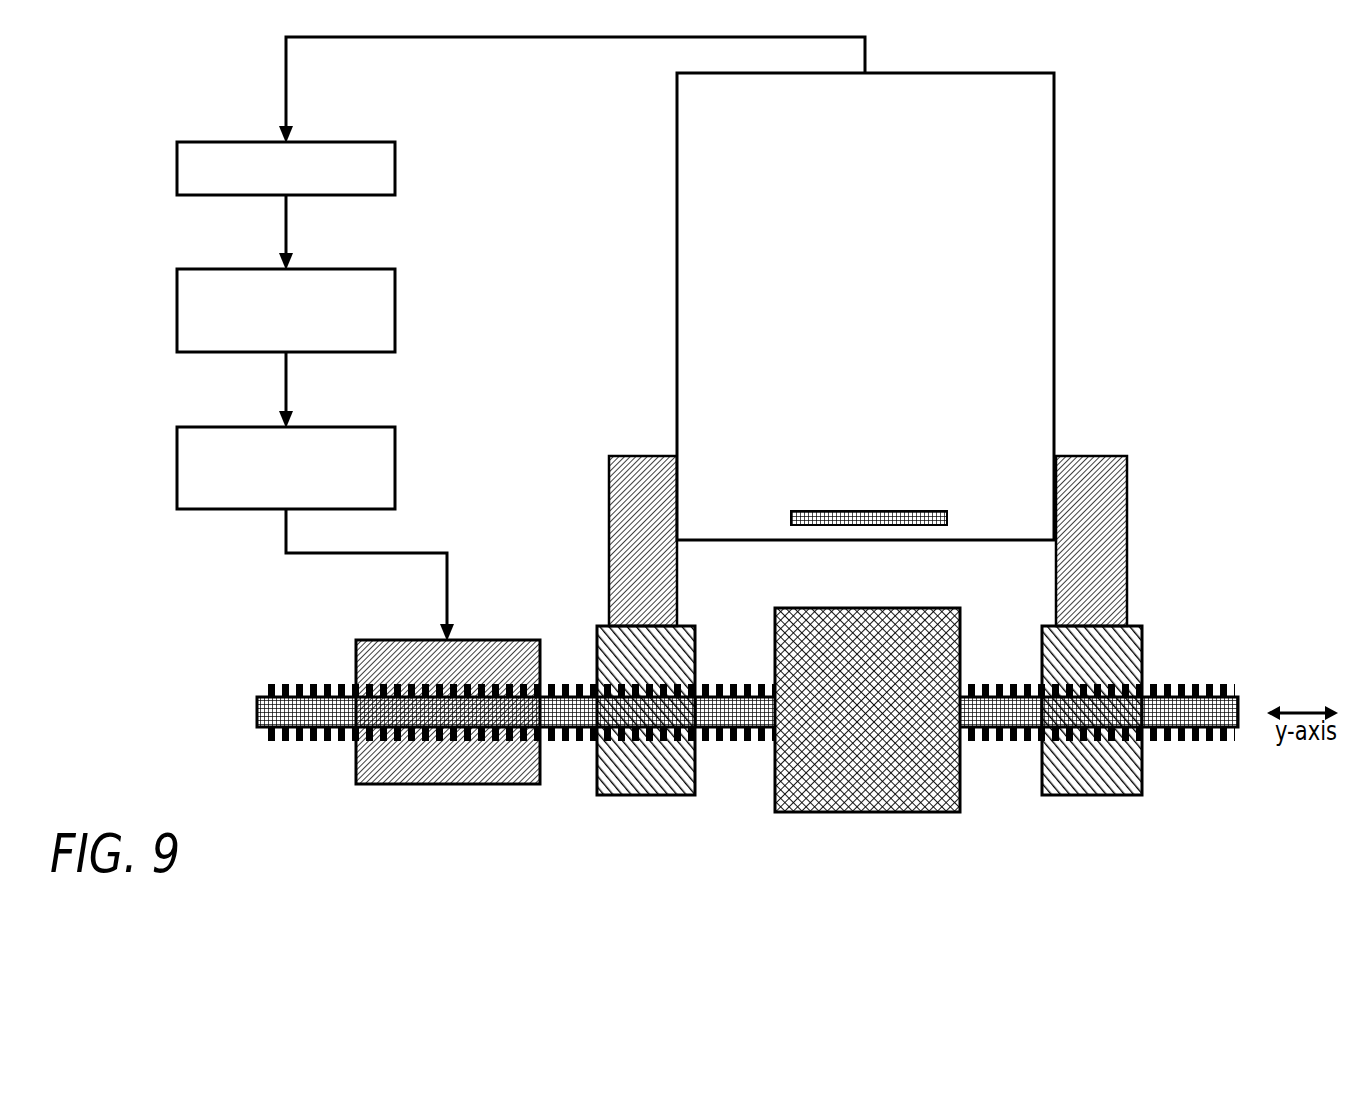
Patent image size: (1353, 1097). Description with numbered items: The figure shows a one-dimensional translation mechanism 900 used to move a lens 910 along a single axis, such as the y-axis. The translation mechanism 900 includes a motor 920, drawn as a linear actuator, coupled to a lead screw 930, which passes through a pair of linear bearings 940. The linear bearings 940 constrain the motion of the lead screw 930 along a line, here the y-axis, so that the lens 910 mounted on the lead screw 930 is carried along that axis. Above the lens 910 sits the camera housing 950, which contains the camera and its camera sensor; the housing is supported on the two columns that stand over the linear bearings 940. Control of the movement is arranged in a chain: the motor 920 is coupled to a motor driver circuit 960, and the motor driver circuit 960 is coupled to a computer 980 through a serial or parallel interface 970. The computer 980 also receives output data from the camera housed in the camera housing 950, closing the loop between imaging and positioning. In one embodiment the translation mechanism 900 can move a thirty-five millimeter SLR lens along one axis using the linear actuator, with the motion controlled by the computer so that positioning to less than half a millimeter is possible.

The translation mechanism 900 is at (1094, 430).
The lens 910 is at (858, 814).
The motor 920 is at (442, 786).
The lead screw 930 is at (317, 742).
The linear bearings 940 is at (647, 797).
The camera housing 950 is at (1055, 186).
The motor driver circuit 960 is at (353, 427).
The serial or parallel interface 970 is at (353, 269).
The computer 980 is at (353, 142).